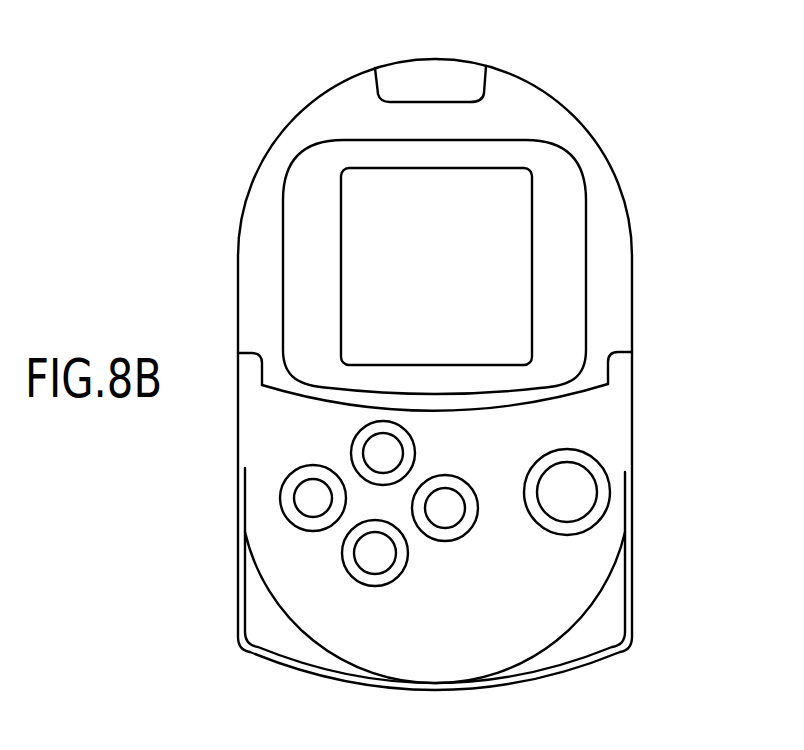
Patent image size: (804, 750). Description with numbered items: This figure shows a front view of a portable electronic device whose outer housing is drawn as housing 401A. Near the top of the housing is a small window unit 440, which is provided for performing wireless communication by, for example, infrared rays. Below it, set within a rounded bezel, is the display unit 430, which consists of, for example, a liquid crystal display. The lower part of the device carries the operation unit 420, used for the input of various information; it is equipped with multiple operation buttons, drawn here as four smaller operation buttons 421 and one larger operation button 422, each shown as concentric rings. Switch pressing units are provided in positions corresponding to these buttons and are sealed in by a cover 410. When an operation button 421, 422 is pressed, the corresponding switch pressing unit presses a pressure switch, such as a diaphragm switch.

The mobile terminal 401A is at (620, 257).
The cover 410 is at (620, 445).
The operation unit 420 is at (500, 627).
The operation button 421 is at (390, 453).
The operation button 422 is at (562, 503).
The display unit 430 is at (383, 183).
The window unit 440 is at (462, 78).